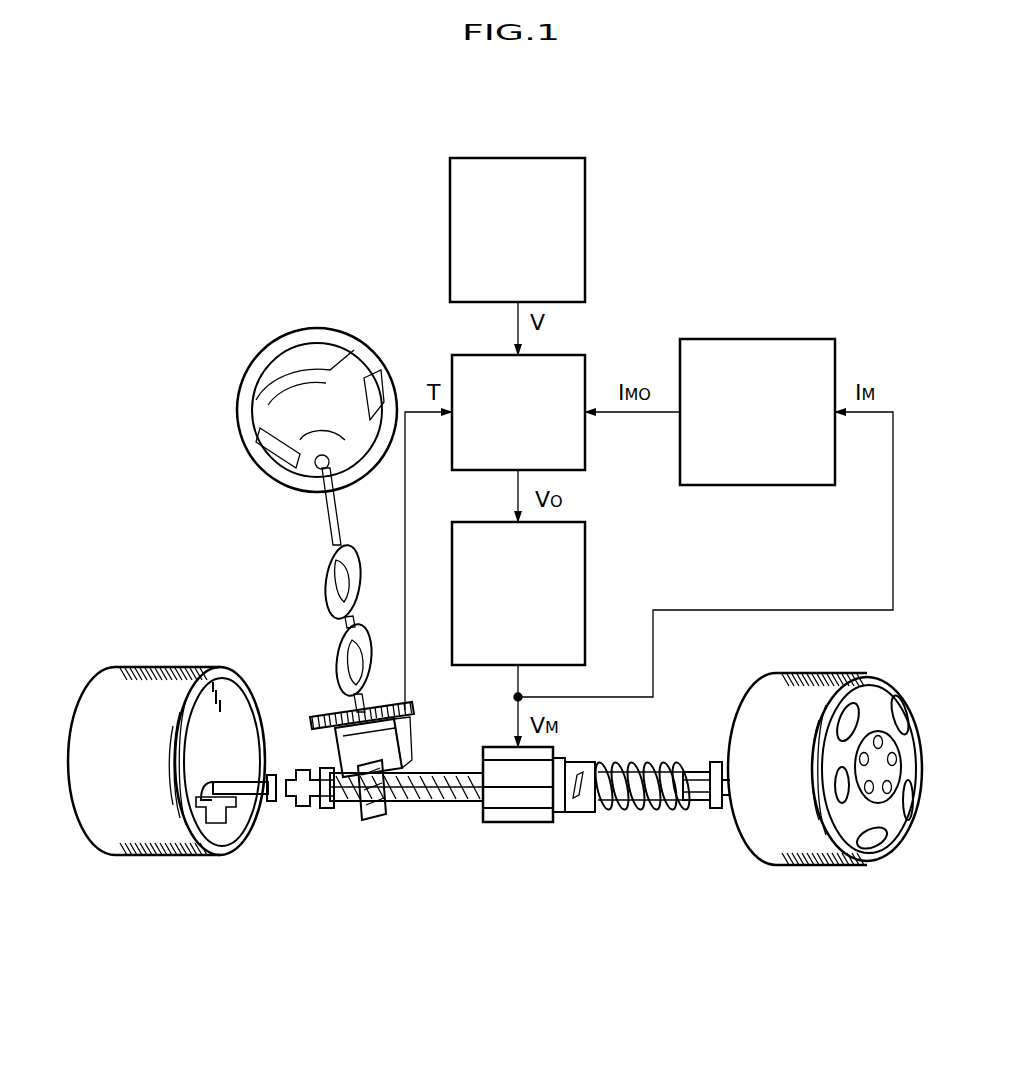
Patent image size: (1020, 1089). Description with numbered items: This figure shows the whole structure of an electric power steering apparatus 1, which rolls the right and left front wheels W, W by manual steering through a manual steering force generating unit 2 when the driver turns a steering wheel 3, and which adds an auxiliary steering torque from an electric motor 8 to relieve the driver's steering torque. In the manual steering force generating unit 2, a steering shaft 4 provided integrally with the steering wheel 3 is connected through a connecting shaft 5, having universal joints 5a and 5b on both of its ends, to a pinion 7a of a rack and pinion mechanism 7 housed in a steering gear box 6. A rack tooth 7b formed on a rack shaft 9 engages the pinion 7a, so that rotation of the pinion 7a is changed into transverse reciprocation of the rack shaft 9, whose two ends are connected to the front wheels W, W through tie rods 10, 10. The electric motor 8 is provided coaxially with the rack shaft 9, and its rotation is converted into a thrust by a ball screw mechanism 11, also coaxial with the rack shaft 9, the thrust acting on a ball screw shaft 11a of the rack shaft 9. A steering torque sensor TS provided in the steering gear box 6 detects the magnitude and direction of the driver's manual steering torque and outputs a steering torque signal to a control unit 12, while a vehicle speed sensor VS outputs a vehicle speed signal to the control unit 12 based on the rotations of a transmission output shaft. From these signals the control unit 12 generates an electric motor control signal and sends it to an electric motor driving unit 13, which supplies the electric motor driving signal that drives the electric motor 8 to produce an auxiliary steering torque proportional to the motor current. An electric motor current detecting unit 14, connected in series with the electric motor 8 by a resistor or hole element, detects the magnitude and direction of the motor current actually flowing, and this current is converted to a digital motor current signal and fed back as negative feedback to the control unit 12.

The electric power steering apparatus 1 is at (214, 270).
The manual steering force generating unit 2 is at (217, 540).
The steering wheel 3 is at (349, 330).
The steering shaft 4 is at (325, 522).
The connecting shaft 5 is at (334, 627).
The universal joint 5a is at (330, 585).
The universal joint 5b is at (338, 655).
The steering gear box 6 is at (388, 875).
The rack and pinion mechanism 7 is at (391, 841).
The pinion 7a is at (384, 820).
The rack tooth 7b is at (466, 815).
The electric motor 8 is at (545, 822).
The rack shaft 9 is at (698, 810).
The tie rod 10 is at (230, 800).
The ball screw mechanism 11 is at (657, 782).
The ball screw shaft 11a is at (640, 812).
The control unit 12 is at (573, 355).
The electric motor driving unit 13 is at (588, 557).
The electric motor current detecting unit 14 is at (758, 339).
The front wheel W is at (92, 705).
The steering torque sensor TS is at (335, 742).
The vehicle speed sensor VS is at (515, 158).